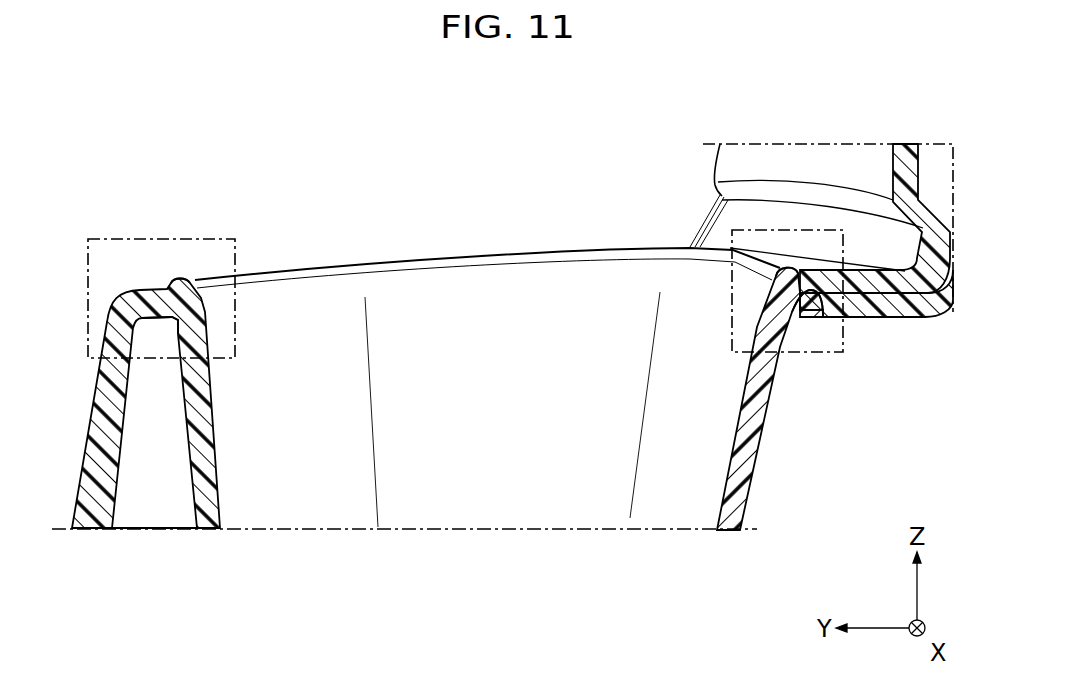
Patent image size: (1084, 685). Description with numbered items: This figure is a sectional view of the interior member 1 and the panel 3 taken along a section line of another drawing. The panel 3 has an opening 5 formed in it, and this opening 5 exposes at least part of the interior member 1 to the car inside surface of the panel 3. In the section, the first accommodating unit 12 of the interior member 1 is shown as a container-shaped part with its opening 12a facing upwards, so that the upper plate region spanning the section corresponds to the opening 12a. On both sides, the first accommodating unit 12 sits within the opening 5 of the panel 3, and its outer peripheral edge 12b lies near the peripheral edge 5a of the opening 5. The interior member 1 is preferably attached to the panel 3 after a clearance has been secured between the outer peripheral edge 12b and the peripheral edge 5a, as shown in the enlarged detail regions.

The interior member 1 is at (468, 386).
The panel 3 is at (95, 368).
The opening 5 is at (483, 238).
The peripheral edge 5a is at (187, 283).
The first accommodating unit 12 is at (537, 515).
The opening 12a is at (512, 258).
The outer peripheral edge 12b is at (170, 330).